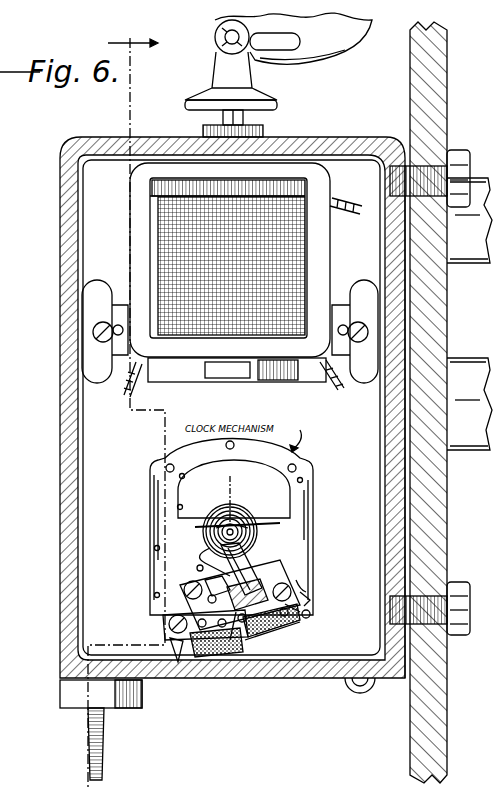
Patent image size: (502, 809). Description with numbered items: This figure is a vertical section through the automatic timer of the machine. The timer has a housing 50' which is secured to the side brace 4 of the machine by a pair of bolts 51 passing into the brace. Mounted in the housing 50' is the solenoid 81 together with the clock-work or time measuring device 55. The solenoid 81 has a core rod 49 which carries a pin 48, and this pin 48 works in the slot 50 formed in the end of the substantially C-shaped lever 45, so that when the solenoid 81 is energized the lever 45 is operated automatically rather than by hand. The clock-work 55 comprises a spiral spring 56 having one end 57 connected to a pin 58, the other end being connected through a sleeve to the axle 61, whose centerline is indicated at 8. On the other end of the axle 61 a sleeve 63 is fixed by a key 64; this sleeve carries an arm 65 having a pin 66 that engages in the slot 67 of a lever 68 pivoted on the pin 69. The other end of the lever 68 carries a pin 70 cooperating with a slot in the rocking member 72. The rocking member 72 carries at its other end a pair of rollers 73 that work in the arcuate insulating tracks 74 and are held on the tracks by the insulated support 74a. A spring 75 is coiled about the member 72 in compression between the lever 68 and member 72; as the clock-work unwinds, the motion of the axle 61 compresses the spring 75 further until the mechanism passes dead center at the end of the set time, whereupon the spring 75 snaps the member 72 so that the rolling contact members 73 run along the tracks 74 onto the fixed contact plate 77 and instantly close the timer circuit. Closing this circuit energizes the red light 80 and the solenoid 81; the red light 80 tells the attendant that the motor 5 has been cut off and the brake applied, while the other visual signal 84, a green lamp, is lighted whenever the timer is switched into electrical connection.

The side brace 4 is at (438, 104).
The motor 5 is at (121, 413).
The axis 8 is at (230, 492).
The lever 45 is at (345, 42).
The pin 48 is at (216, 38).
The core rod 49 is at (243, 118).
The slot 50 is at (287, 60).
The housing 50' is at (213, 458).
The bolts 51 is at (455, 152).
The clock-work or time measuring device 55 is at (313, 492).
The spiral spring 56 is at (245, 510).
The end of spiral spring 57 is at (310, 596).
The pin 58 is at (311, 614).
The axle 61 is at (220, 536).
The sleeve 63 is at (250, 528).
The key 64 is at (200, 527).
The arm 65 is at (205, 556).
The pin 66 is at (198, 570).
The slot 67 is at (249, 569).
The lever 68 is at (268, 582).
The pin 69 is at (217, 586).
The pin 70 is at (301, 580).
The rocking member 72 is at (274, 636).
The rollers 73 is at (246, 645).
The arcuate insulating tracks 74 is at (298, 622).
The insulated support 74a is at (215, 655).
The spring 75 is at (292, 606).
The contact plate 77 is at (178, 645).
The red light 80 is at (470, 264).
The solenoid 81 is at (160, 220).
The visual signal 84 is at (470, 452).